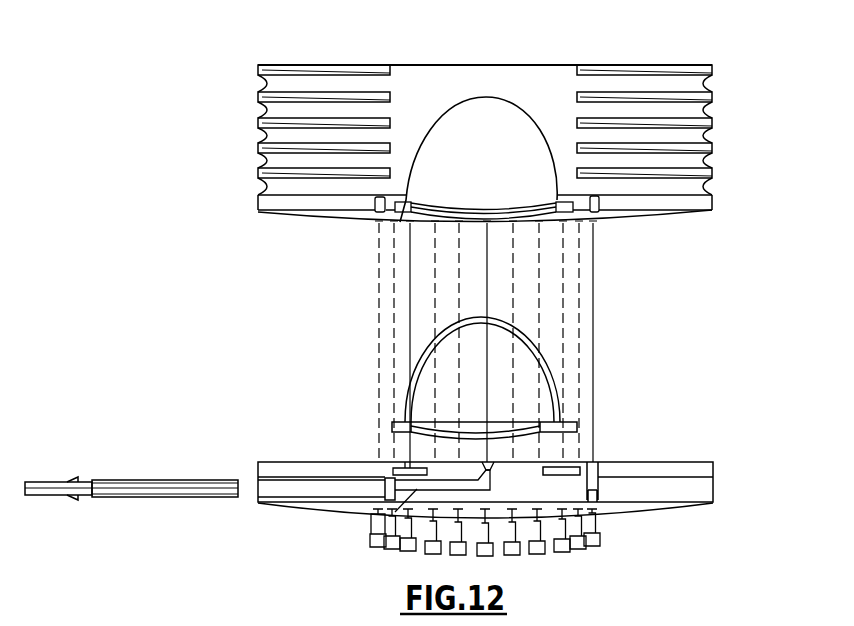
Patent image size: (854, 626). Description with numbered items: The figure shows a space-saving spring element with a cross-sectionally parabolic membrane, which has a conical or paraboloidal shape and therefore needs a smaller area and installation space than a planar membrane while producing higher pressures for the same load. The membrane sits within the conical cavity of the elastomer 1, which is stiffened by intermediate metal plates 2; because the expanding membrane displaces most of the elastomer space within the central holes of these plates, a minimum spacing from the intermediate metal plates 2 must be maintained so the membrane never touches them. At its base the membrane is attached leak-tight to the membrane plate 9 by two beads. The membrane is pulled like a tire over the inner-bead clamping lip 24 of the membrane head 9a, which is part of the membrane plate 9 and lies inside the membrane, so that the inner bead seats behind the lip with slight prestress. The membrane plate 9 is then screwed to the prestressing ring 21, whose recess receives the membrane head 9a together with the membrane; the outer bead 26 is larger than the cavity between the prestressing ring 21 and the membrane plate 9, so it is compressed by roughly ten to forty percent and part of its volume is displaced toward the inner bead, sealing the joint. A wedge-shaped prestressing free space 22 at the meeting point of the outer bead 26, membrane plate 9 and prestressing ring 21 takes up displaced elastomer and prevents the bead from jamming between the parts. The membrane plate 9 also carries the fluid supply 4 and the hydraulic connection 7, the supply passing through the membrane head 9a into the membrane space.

The elastomer 1 is at (420, 92).
The intermediate metal plates 2 is at (648, 175).
The prestressing ring 21 is at (687, 203).
The prestressing free space 22 is at (408, 208).
The inner-bead clamping lip 24 is at (422, 467).
The outer bead 26 is at (568, 418).
The fluid supply 4 is at (377, 537).
The hydraulic connection 7 is at (168, 490).
The membrane plate 9 is at (652, 487).
The membrane head 9a is at (507, 468).